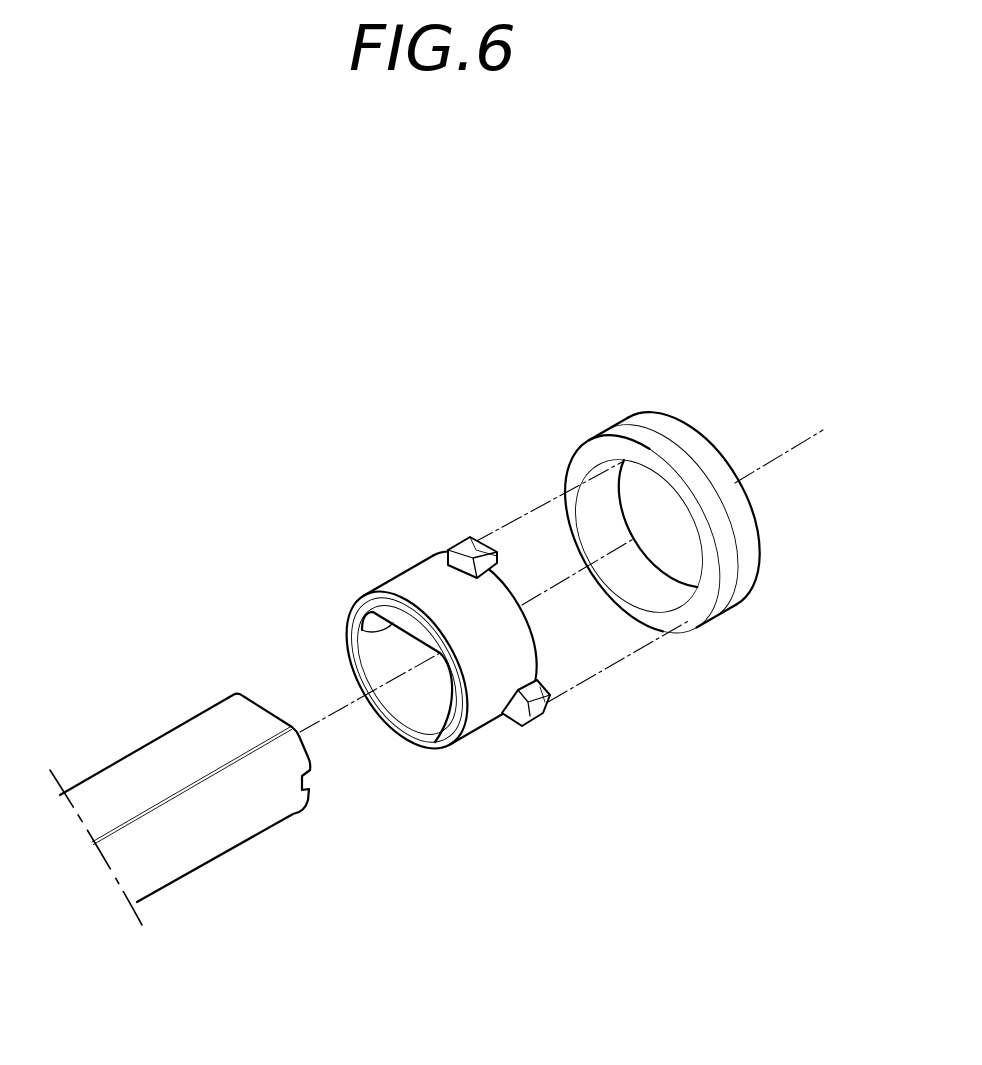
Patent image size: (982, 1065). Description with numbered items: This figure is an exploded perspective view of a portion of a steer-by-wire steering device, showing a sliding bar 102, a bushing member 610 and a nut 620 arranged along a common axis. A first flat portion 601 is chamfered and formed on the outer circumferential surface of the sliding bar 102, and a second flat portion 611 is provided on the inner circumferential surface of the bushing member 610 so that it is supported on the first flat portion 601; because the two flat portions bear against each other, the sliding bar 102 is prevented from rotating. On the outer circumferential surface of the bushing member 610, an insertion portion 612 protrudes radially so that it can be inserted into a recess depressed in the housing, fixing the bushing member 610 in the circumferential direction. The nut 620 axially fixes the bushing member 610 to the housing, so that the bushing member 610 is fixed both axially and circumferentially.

The sliding bar 102 is at (177, 789).
The first flat portion 601 is at (173, 760).
The bushing member 610 is at (416, 625).
The second flat portion 611 is at (362, 630).
The insertion portion 612 is at (470, 542).
The nut 620 is at (603, 413).